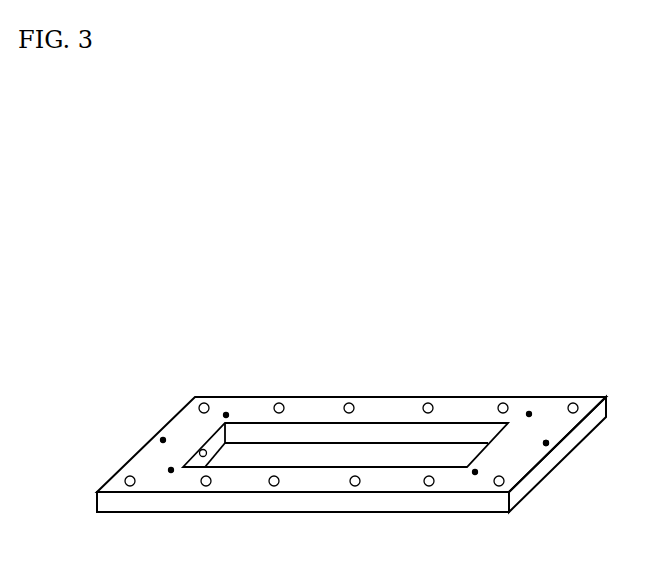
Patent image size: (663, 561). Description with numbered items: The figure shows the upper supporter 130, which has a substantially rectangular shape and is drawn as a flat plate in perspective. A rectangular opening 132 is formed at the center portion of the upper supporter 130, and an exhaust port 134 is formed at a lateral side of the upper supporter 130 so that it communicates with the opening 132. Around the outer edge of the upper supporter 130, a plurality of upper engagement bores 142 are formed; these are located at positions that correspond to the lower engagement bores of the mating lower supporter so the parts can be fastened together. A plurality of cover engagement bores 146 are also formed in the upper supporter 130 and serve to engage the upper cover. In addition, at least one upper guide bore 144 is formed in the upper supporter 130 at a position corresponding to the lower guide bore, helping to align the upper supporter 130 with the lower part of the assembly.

The upper supporter 130 is at (132, 402).
The opening 132 is at (441, 432).
The exhaust port 134 is at (203, 449).
The upper engagement bores 142 is at (573, 403).
The upper guide bore 144 is at (549, 445).
The cover engagement bores 146 is at (529, 411).